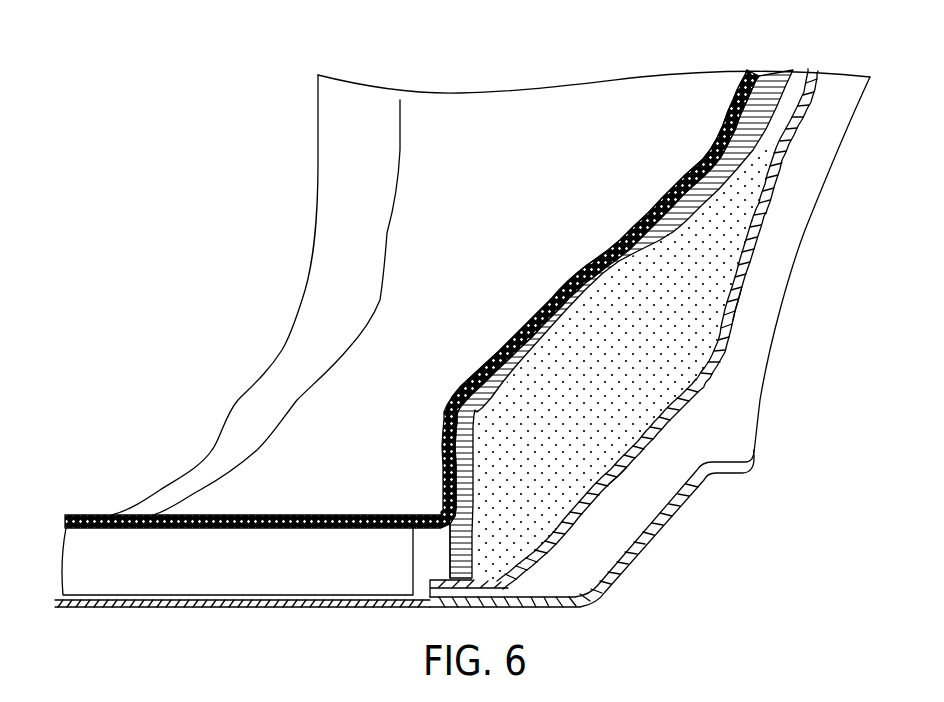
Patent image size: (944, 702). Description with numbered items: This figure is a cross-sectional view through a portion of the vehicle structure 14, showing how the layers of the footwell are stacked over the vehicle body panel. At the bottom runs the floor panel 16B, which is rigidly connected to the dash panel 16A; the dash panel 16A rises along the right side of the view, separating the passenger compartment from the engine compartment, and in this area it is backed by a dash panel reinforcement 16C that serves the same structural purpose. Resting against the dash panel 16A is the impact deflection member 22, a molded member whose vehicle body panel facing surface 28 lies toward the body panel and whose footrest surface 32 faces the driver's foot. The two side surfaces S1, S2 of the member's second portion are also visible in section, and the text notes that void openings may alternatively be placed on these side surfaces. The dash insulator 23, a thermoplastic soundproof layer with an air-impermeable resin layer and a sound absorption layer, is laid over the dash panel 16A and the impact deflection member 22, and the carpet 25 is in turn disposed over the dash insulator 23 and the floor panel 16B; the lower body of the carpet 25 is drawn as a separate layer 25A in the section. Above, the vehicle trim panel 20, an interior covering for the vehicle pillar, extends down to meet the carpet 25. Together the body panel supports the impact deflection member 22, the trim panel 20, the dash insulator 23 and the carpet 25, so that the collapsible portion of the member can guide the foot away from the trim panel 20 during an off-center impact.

The vehicle structure 14 is at (727, 33).
The vehicle trim panel 20 is at (355, 182).
The impact deflection member 22 is at (748, 248).
The dash insulator 23 is at (457, 550).
The carpet 25 is at (297, 512).
The tread base 25A is at (162, 558).
The vehicle body panel facing surface 28 is at (688, 397).
The footrest surface 32 is at (603, 268).
The dash panel 16A is at (612, 478).
The floor panel 16B is at (245, 603).
The dash panel reinforcement 16C is at (640, 550).
The side surface S1 is at (452, 465).
The side surface S2 is at (730, 303).